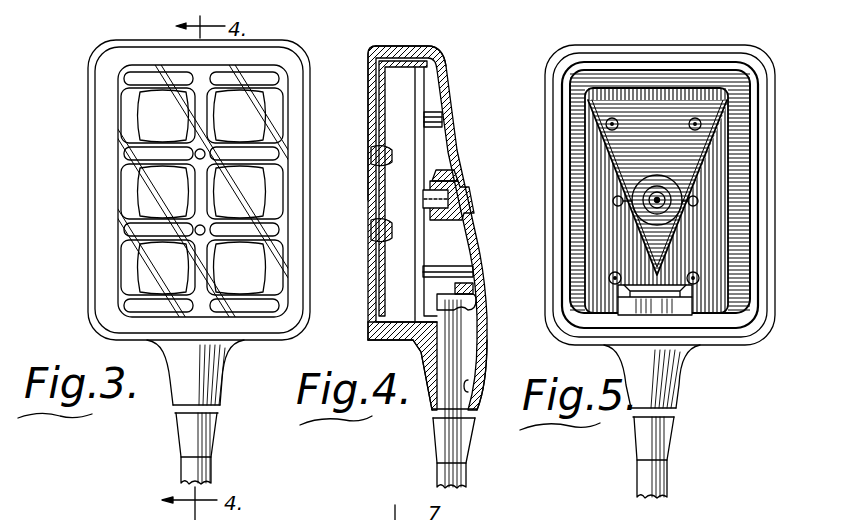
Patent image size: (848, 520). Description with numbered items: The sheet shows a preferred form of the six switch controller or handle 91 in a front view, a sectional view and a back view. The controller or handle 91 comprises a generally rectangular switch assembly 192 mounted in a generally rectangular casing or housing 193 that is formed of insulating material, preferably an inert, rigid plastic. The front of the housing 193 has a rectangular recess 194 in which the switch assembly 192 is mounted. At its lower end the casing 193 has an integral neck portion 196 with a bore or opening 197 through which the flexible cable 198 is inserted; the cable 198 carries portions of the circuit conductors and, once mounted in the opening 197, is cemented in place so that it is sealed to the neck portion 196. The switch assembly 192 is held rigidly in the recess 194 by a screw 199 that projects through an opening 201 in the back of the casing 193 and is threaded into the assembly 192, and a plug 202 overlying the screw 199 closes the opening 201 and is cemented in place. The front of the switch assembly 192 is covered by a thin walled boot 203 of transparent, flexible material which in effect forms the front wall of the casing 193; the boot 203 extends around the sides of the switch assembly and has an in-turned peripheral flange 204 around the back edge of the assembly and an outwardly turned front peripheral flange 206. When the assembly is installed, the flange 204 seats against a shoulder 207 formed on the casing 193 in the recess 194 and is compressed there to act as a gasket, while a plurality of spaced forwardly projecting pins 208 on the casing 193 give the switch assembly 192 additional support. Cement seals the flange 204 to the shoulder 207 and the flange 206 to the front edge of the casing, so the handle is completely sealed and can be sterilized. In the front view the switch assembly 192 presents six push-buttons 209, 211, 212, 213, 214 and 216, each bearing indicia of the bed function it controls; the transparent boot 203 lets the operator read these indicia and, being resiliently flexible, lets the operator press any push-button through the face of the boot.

In FIG. 3, the controller or handle 91 is at (76, 220).
In FIG. 4, the controller or handle 91 is at (457, 103).
In FIG. 5, the controller or handle 91 is at (547, 103).
In FIG. 4, the switch assembly 192 is at (396, 120).
In FIG. 3, the casing or housing 193 is at (95, 125).
In FIG. 4, the casing or housing 193 is at (466, 150).
In FIG. 5, the casing or housing 193 is at (550, 154).
In FIG. 4, the recess 194 is at (368, 320).
In FIG. 3, the neck portion 196 is at (206, 380).
In FIG. 4, the neck portion 196 is at (478, 376).
In FIG. 5, the neck portion 196 is at (673, 385).
In FIG. 4, the bore or opening 197 is at (468, 386).
In FIG. 3, the flexible cable 198 is at (206, 471).
In FIG. 4, the flexible cable 198 is at (467, 472).
In FIG. 5, the flexible cable 198 is at (662, 474).
In FIG. 4, the screw 199 is at (470, 190).
In FIG. 4, the opening 201 is at (470, 212).
In FIG. 5, the opening 201 is at (665, 196).
In FIG. 4, the plug 202 is at (468, 200).
In FIG. 3, the boot 203 is at (290, 87).
In FIG. 4, the boot 203 is at (379, 213).
In FIG. 4, the in-turned peripheral flange 204 is at (448, 84).
In FIG. 5, the in-turned peripheral flange 204 is at (681, 78).
In FIG. 4, the front peripheral flange 206 is at (368, 66).
In FIG. 4, the shoulder 207 is at (440, 60).
In FIG. 4, the pins 208 is at (444, 122).
In FIG. 5, the pins 208 is at (606, 124).
In FIG. 3, the push-button 209 is at (136, 107).
In FIG. 5, the push-button 209 is at (700, 121).
In FIG. 3, the push-button 211 is at (265, 117).
In FIG. 3, the push-button 212 is at (136, 186).
In FIG. 3, the push-button 213 is at (266, 188).
In FIG. 3, the push-button 214 is at (136, 271).
In FIG. 3, the push-button 216 is at (266, 272).